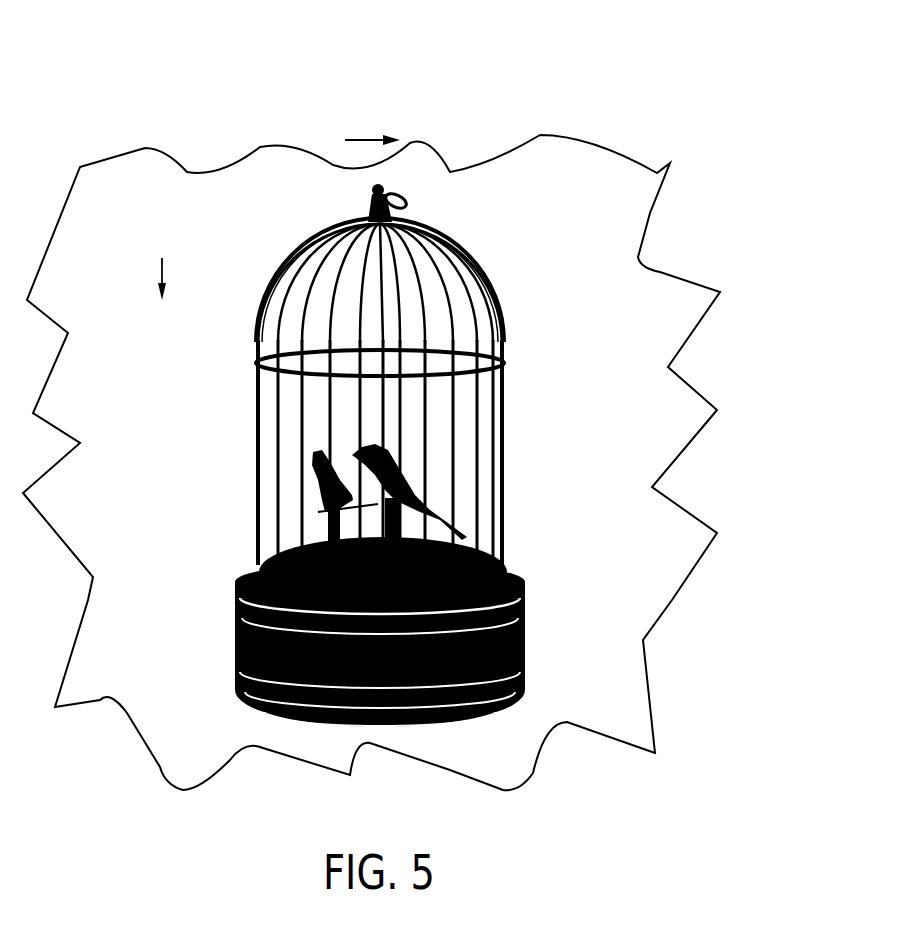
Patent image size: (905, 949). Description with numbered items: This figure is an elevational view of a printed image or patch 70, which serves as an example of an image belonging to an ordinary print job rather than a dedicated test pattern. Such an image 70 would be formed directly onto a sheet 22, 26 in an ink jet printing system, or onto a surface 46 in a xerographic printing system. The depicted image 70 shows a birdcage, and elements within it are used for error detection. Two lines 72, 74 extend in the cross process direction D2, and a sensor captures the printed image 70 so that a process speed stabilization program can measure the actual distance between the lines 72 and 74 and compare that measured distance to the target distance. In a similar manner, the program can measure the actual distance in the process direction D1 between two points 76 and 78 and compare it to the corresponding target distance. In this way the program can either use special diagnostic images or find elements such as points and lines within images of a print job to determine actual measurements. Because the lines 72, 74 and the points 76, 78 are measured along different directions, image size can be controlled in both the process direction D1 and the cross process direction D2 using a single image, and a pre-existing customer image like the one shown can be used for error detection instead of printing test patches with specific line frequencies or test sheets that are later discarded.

The printed image 70 is at (250, 118).
The sheet 22 is at (371, 438).
The sheet 26 is at (371, 438).
The surface 46 is at (550, 153).
The line 72 is at (480, 470).
The line 74 is at (277, 470).
The point 76 is at (503, 372).
The point 78 is at (263, 372).
The process direction D1 is at (362, 138).
The cross process direction D2 is at (162, 260).